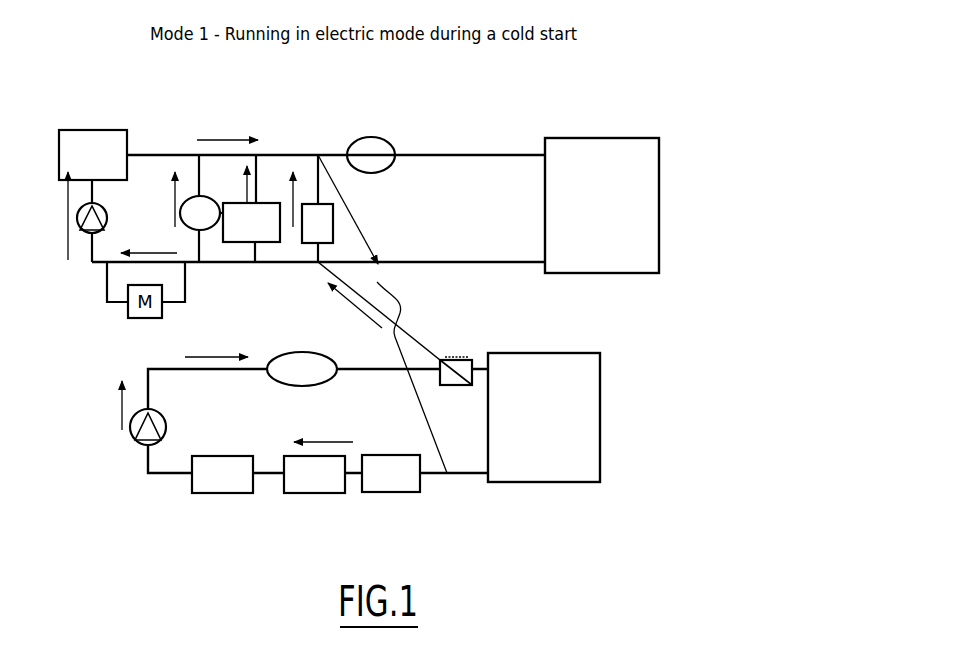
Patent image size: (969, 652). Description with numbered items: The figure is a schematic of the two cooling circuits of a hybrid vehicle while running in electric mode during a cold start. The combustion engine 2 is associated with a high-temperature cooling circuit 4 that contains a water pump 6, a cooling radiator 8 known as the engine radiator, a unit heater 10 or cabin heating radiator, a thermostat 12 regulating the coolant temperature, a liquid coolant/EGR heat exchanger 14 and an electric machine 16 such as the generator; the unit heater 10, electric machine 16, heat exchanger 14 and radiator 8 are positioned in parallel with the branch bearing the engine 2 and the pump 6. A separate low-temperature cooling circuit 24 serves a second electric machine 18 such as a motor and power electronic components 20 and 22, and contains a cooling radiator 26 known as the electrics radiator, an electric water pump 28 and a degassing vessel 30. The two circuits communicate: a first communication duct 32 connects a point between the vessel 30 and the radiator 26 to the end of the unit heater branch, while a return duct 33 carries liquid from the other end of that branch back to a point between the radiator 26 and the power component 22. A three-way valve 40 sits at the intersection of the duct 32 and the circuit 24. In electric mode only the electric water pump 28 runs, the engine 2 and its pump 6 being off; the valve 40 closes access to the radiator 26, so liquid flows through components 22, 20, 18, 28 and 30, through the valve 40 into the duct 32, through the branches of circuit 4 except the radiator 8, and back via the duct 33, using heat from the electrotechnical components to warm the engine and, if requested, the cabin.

The combustion engine 2 is at (86, 130).
The cooling circuit 4 is at (461, 150).
The water pump 6 is at (86, 237).
The cooling radiator 8 is at (662, 160).
The unit heater 10 is at (335, 223).
The thermostat 12 is at (378, 137).
The liquid coolant/EGR heat exchanger 14 is at (194, 197).
The electric machine 16 is at (273, 244).
The second electric machine 18 is at (223, 494).
The power electronic component 20 is at (298, 494).
The power electronic component 22 is at (388, 493).
The cooling circuit 24 is at (163, 490).
The cooling radiator 26 is at (602, 373).
The electric water pump 28 is at (166, 422).
The degassing vessel 30 is at (305, 352).
The first communication duct 32 is at (417, 340).
The return duct 33 is at (377, 282).
The three-way valve 40 is at (452, 386).